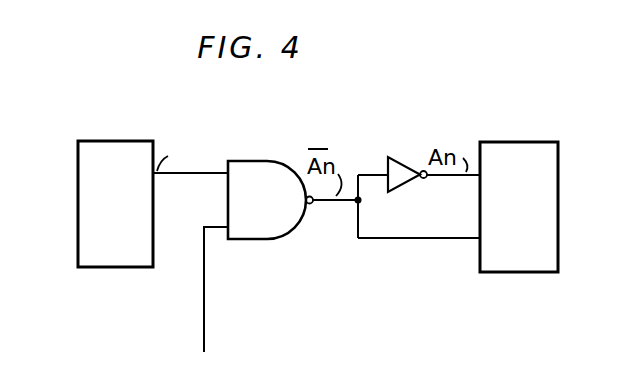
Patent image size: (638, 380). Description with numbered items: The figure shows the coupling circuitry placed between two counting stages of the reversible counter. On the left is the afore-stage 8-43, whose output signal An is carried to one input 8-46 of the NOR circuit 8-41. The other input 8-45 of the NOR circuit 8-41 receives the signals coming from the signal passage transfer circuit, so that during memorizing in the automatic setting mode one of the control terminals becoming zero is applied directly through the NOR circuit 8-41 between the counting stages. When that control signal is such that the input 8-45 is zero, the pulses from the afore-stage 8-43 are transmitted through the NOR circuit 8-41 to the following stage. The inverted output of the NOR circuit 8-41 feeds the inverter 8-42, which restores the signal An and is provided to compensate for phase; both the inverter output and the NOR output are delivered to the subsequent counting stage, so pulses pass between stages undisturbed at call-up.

The NOR circuit 8-41 is at (265, 228).
The inverter 8-42 is at (402, 160).
The afore-stage 8-43 is at (110, 268).
The other input 8-45 is at (204, 314).
The one input 8-46 is at (186, 176).